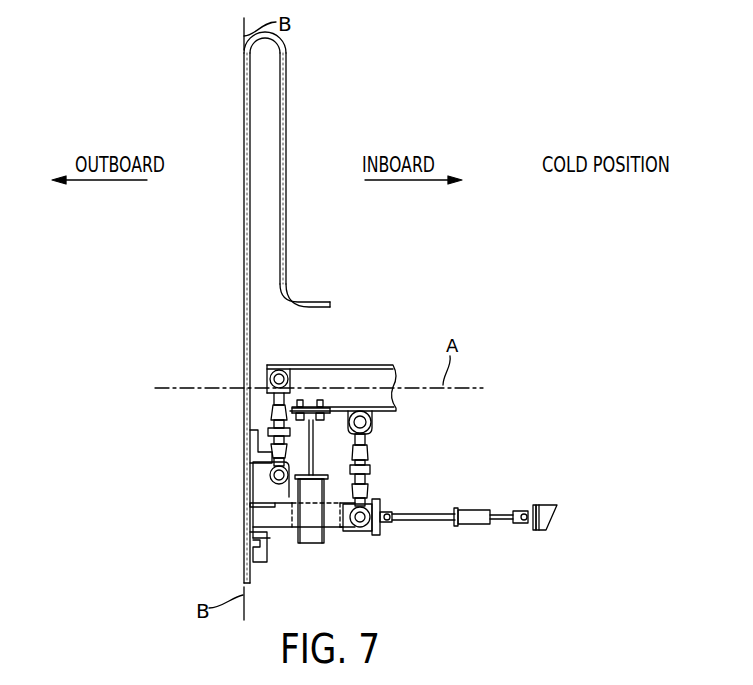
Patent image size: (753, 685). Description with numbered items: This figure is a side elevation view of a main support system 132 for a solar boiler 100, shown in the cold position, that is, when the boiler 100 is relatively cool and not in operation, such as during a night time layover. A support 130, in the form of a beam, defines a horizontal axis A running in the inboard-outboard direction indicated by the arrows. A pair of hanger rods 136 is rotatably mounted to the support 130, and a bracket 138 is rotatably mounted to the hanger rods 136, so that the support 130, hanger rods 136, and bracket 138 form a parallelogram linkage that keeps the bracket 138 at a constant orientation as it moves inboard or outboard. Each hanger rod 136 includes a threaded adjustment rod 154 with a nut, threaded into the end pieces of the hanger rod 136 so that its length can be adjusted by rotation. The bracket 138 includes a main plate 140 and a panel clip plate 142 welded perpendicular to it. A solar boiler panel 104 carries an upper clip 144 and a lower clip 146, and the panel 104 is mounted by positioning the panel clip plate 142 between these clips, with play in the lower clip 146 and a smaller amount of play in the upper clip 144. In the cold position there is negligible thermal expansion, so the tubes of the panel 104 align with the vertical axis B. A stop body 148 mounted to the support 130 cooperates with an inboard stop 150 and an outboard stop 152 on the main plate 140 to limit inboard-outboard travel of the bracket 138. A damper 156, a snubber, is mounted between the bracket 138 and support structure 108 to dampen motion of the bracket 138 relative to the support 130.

The boiler 100 is at (537, 69).
The solar boiler panel 104 is at (244, 170).
The support structure 108 is at (560, 508).
The support 130 is at (360, 372).
The main support system 132 is at (208, 434).
The hanger rods 136 is at (272, 400).
The bracket 138 is at (376, 535).
The main plate 140 is at (270, 540).
The panel clip plate 142 is at (253, 492).
The upper clip 144 is at (252, 440).
The lower clip 146 is at (253, 552).
The stop body 148 is at (318, 543).
The inboard stop 150 is at (345, 530).
The outboard stop 152 is at (289, 533).
The threaded adjustment rod 154 is at (362, 478).
The damper 156 is at (473, 511).